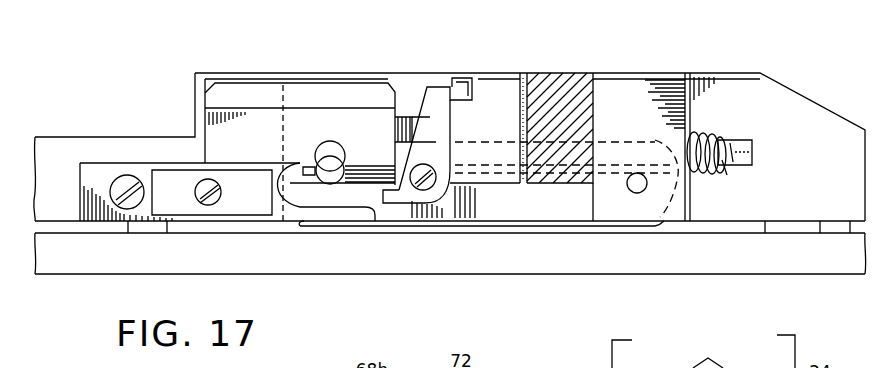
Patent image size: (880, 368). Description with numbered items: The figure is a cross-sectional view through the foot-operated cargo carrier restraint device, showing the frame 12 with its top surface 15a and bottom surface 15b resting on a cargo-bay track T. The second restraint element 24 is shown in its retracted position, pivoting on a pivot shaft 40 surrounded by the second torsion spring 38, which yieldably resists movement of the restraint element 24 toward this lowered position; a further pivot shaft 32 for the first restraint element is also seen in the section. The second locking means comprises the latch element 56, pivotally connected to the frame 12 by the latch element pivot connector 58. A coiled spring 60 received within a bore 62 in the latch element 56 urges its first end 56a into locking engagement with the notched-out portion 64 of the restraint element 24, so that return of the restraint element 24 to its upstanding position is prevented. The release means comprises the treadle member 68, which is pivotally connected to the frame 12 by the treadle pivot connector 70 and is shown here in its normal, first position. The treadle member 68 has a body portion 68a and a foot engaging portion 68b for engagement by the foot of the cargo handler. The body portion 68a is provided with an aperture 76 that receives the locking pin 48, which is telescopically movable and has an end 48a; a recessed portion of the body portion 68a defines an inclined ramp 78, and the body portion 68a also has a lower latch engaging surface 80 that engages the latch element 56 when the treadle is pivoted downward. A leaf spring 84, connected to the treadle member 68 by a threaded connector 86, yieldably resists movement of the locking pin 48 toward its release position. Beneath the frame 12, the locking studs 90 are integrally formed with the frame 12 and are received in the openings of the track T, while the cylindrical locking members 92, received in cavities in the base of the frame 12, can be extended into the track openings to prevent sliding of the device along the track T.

The frame 12 is at (662, 61).
The top surface 15a is at (255, 80).
The bottom surface 15b is at (60, 224).
The second restraint element 24 is at (515, 185).
The pivot shaft 32 is at (637, 193).
The second torsion spring 38 is at (700, 134).
The pivot shaft 40 is at (752, 152).
The locking pin 48 is at (332, 185).
The ball seat 48a is at (291, 164).
The latch element 56 is at (418, 102).
The first end of latch element 56a is at (458, 92).
The latch element pivot connector 58 is at (432, 182).
The coiled spring 60 is at (395, 108).
The bore 62 is at (438, 140).
The notched-out portion 64 is at (466, 76).
The treadle member 68 is at (229, 93).
The body portion 68a is at (284, 215).
The foot engaging portion 68b is at (315, 90).
The treadle pivot connector 70 is at (123, 181).
The aperture 76 is at (322, 150).
The inclined ramp 78 is at (375, 165).
The lower latch engaging surface 80 is at (372, 207).
The leaf spring 84 is at (175, 184).
The threaded connector 86 is at (211, 197).
The locking studs 90 is at (798, 237).
The locking members 92 is at (148, 228).
The track T is at (714, 270).